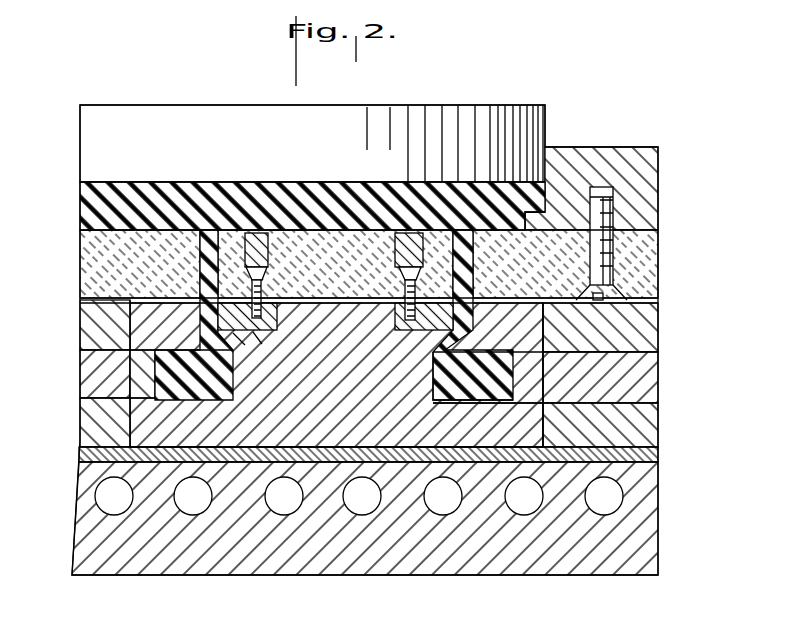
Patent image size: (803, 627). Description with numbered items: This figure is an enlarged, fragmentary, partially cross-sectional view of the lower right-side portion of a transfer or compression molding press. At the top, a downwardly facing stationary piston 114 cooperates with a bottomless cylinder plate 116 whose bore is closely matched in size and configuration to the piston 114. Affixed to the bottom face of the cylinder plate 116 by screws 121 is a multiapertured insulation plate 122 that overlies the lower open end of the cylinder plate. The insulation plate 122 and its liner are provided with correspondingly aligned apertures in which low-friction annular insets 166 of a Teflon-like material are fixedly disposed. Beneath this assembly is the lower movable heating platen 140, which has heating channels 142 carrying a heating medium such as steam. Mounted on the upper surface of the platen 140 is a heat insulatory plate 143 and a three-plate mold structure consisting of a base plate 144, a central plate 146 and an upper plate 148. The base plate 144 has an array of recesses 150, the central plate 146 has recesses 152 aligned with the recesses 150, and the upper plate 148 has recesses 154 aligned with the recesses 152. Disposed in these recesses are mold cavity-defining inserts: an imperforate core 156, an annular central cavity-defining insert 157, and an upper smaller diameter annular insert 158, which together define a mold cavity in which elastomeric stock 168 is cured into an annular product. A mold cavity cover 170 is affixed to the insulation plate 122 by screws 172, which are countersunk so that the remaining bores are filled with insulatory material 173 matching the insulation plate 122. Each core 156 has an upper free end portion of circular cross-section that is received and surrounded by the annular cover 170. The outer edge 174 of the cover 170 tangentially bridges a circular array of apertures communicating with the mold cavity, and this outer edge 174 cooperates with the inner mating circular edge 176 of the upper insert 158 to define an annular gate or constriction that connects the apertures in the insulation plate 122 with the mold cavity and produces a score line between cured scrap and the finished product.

The stationary piston 114 is at (438, 103).
The cylinder plate 116 is at (630, 152).
The screws 121 is at (612, 212).
The insulation plate 122 is at (640, 268).
The lower movable heating platen 140 is at (445, 572).
The heating channels 142 is at (614, 497).
The heat insulatory plate 143 is at (648, 458).
The base plate 144 is at (648, 431).
The central plate 146 is at (642, 378).
The upper plate 148 is at (648, 329).
The recesses 150 is at (135, 423).
The recesses 152 is at (135, 370).
The recesses 154 is at (135, 313).
The imperforate core 156 is at (325, 430).
The annular central cavity-defining insert 157 is at (522, 400).
The upper annular insert 158 is at (172, 340).
The low-friction annular insets 166 is at (196, 259).
The elastomeric stock 168 is at (95, 200).
The mold cavity cover 170 is at (278, 326).
The screws 172 is at (262, 292).
The insulatory material 173 is at (400, 253).
The outer edge 174 is at (250, 331).
The inner mating circular edge 176 is at (437, 368).